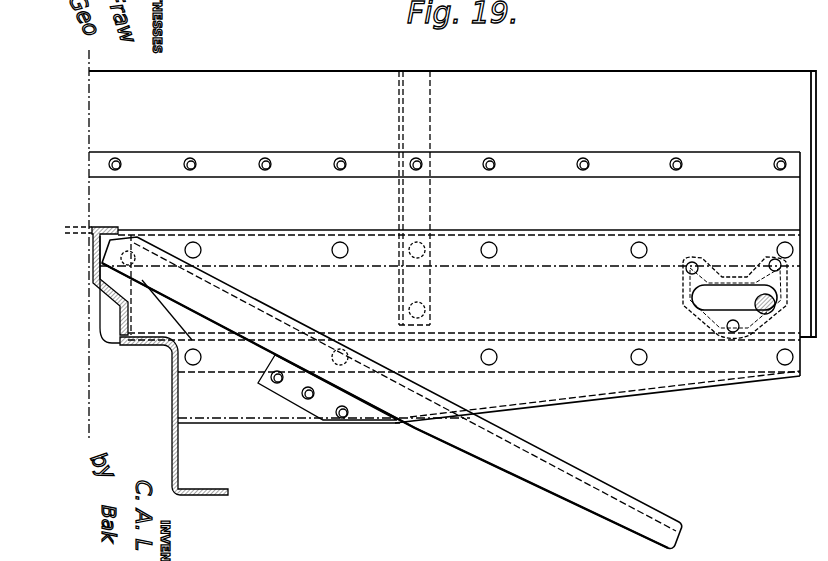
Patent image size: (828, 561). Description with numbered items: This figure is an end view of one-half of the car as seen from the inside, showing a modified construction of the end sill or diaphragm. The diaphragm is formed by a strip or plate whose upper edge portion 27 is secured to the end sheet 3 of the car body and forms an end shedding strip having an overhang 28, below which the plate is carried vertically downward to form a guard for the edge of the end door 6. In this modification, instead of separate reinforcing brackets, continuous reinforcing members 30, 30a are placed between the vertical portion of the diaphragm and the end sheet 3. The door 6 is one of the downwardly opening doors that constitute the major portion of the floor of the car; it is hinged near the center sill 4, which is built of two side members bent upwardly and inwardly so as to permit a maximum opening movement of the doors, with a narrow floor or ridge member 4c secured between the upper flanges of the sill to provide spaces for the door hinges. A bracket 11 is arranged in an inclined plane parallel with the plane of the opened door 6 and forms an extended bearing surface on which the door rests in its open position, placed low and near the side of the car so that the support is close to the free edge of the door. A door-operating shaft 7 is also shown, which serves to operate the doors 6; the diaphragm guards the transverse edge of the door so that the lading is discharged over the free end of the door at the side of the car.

The end sheet 3 is at (452, 223).
The upper edge portion 27 is at (463, 198).
The overhang 28 is at (531, 224).
The continuous reinforcing member 30 is at (581, 247).
The continuous reinforcing member 30a is at (562, 349).
The door-operating shaft 7 is at (756, 303).
The door 6 is at (526, 455).
The bracket 11 is at (282, 388).
The floor or ridge member 4c is at (90, 237).
The center sill 4 is at (172, 406).